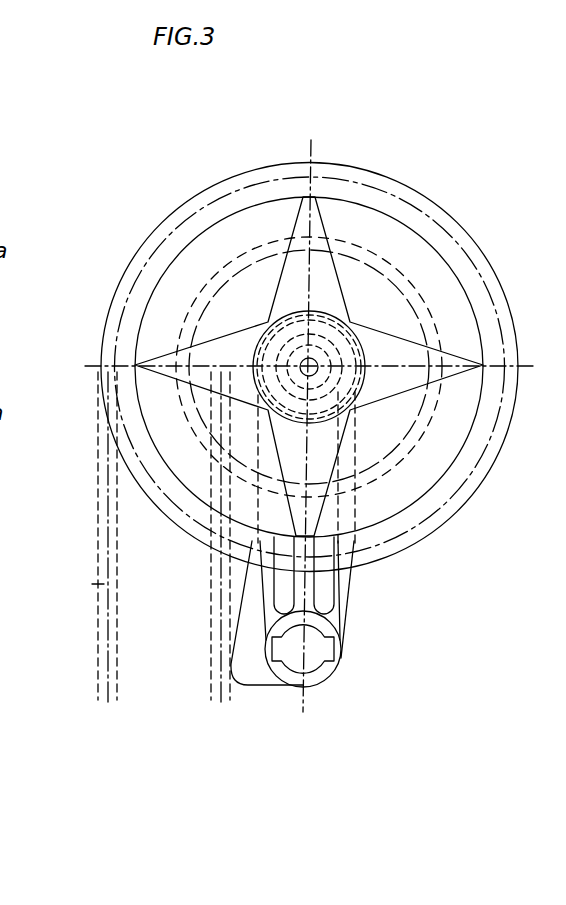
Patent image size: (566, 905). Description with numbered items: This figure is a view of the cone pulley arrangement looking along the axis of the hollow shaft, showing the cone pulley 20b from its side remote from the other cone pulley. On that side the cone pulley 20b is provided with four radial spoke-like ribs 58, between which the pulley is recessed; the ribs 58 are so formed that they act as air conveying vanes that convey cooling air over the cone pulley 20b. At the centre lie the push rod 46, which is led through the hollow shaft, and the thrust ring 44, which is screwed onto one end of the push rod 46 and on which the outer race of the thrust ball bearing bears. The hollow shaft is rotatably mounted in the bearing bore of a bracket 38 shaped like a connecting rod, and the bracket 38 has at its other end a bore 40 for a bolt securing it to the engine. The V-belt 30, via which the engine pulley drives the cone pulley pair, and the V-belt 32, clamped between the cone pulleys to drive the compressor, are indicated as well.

The cone pulley 20b is at (445, 307).
The radial spoke-like ribs 58 is at (325, 268).
The push rod 46 is at (312, 364).
The thrust ring 44 is at (343, 407).
The bracket 38 is at (340, 583).
The bore 40 is at (315, 636).
The V-belt 32 is at (97, 584).
The V-belt 30 is at (218, 610).